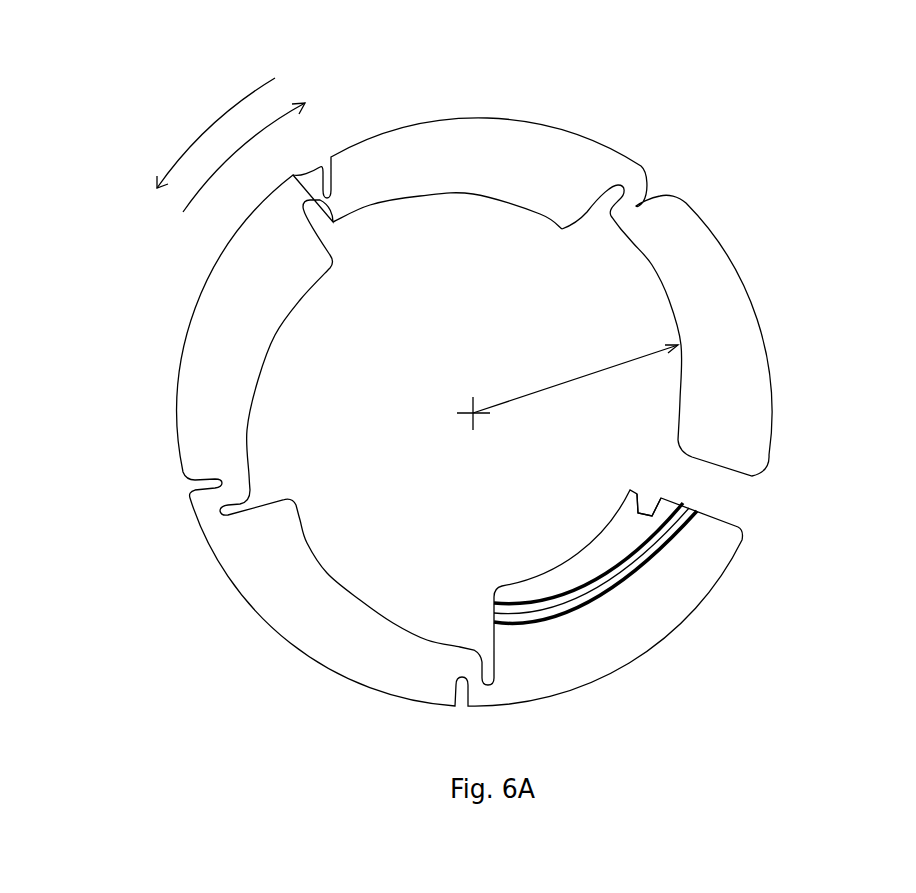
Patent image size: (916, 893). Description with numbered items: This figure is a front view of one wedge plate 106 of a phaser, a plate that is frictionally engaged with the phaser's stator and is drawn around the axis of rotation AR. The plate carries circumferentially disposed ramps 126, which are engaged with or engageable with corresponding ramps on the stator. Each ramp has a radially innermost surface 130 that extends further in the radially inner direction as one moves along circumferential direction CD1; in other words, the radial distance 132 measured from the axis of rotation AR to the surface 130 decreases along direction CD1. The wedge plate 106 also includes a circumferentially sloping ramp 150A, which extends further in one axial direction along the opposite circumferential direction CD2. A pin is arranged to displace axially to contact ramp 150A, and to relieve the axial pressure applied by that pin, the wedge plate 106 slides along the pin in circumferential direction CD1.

The wedge plate 106 is at (811, 141).
The ramps 126 is at (657, 287).
The radially innermost surface 130 is at (477, 196).
The radial distance 132 is at (625, 364).
The circumferentially sloping ramp 150A is at (655, 493).
The axis of rotation AR is at (473, 411).
The circumferential direction CD1 is at (277, 118).
The circumferential direction CD2 is at (208, 134).